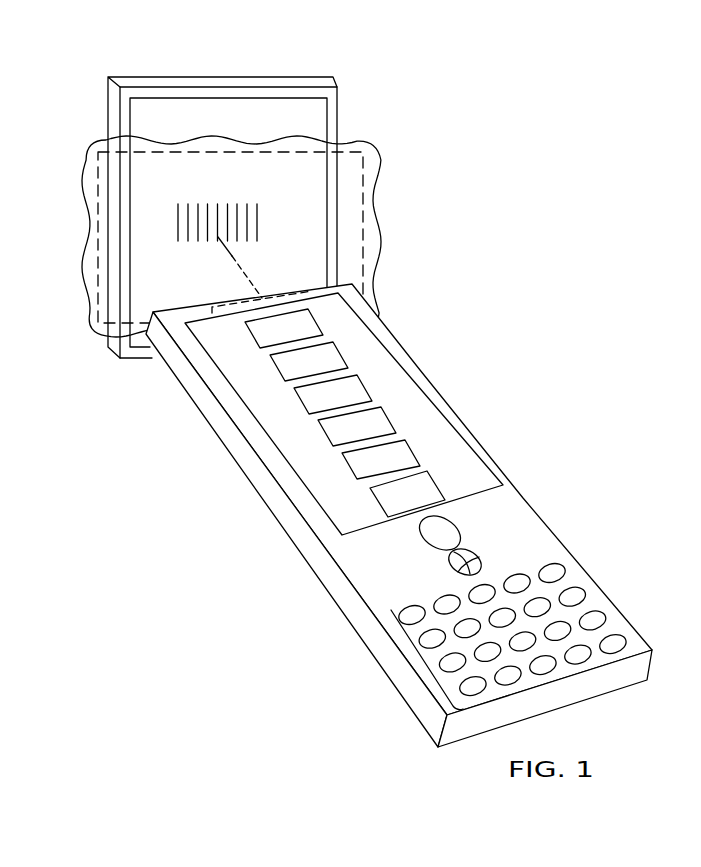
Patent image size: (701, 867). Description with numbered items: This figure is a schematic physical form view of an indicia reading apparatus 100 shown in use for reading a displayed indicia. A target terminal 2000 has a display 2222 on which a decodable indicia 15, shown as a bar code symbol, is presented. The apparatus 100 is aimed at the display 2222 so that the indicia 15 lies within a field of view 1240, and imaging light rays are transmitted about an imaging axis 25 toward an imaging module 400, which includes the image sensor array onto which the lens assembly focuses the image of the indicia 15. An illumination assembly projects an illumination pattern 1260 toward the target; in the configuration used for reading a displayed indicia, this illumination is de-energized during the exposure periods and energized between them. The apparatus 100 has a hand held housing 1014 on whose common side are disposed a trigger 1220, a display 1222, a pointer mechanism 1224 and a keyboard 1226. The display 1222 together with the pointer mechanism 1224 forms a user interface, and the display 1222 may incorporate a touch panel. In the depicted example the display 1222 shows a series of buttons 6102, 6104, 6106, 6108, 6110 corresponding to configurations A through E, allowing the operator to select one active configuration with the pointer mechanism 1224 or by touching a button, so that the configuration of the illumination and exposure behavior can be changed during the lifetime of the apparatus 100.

The target terminal 2000 is at (382, 67).
The display 2222 is at (222, 117).
The field of view 1240 is at (311, 152).
The illumination pattern 1260 is at (377, 167).
The decodable indicia 15 is at (257, 214).
The imaging axis 25 is at (237, 264).
The mobile device 100 is at (497, 280).
The imaging module 400 is at (358, 289).
The display 1222 is at (500, 470).
The button 6102 is at (316, 323).
The button 6104 is at (341, 355).
The button 6106 is at (365, 388).
The button 6108 is at (389, 420).
The button 6110 is at (413, 453).
The trigger 1220 is at (458, 528).
The pointer mechanism 1224 is at (480, 560).
The keyboard 1226 is at (420, 660).
The hand held housing 1014 is at (580, 580).